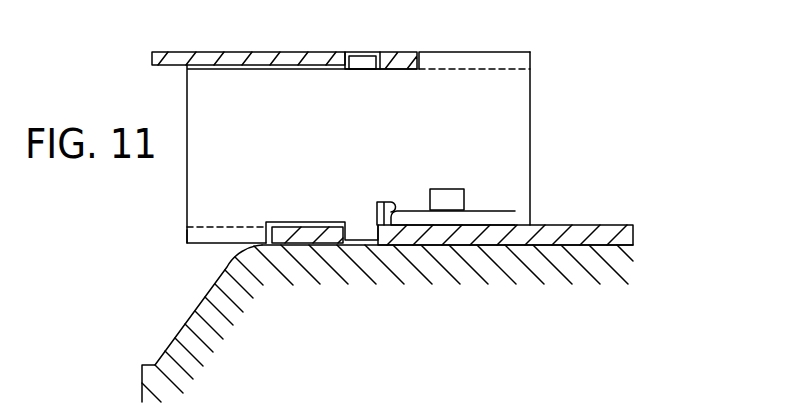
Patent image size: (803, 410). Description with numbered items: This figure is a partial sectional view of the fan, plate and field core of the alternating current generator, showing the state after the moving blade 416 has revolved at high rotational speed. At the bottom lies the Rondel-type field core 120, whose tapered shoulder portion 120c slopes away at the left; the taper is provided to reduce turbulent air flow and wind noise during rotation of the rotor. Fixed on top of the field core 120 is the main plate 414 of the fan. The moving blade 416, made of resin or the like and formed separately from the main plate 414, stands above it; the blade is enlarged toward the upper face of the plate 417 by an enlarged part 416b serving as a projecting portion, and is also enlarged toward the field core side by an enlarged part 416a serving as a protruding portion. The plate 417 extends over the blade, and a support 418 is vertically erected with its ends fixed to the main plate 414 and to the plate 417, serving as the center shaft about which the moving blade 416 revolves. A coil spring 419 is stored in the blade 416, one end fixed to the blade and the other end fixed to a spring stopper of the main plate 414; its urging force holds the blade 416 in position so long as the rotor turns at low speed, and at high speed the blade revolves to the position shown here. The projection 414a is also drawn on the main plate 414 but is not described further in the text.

The plate 417 is at (312, 57).
The enlarged part 416b is at (500, 58).
The moving blade 416 is at (517, 100).
The enlarged part 416a is at (192, 234).
The projection on base plate 414a is at (464, 191).
The coil spring 419 is at (515, 213).
The main plate 414 is at (632, 229).
The support 418 is at (367, 230).
The Rondel-type field core 120 is at (602, 270).
The shoulder portion 120c is at (200, 322).